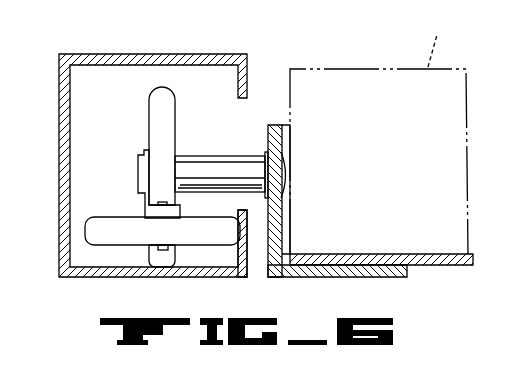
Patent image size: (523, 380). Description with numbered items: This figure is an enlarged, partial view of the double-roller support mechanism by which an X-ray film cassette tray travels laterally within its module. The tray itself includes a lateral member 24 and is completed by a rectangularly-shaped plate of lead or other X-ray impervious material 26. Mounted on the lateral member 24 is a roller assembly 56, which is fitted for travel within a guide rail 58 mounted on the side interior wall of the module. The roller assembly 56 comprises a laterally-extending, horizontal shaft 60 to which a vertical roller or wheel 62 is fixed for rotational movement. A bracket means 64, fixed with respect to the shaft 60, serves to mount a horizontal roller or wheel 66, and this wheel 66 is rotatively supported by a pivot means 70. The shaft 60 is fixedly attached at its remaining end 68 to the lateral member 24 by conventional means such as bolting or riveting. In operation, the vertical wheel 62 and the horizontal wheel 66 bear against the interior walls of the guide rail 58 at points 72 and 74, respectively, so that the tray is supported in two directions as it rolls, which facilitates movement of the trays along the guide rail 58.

The lateral member 24 is at (282, 233).
The plate of X-ray impervious material 26 is at (355, 253).
The roller assembly 56 is at (202, 97).
The guide rail 58 is at (180, 54).
The horizontal shaft 60 is at (199, 156).
The vertical roller 62 is at (149, 115).
The bracket means 64 is at (144, 202).
The horizontal roller 66 is at (117, 246).
The remaining end of shaft 68 is at (283, 163).
The pivot means 70 is at (168, 248).
The bearing point of vertical wheel 72 is at (163, 268).
The bearing point of horizontal wheel 74 is at (243, 237).